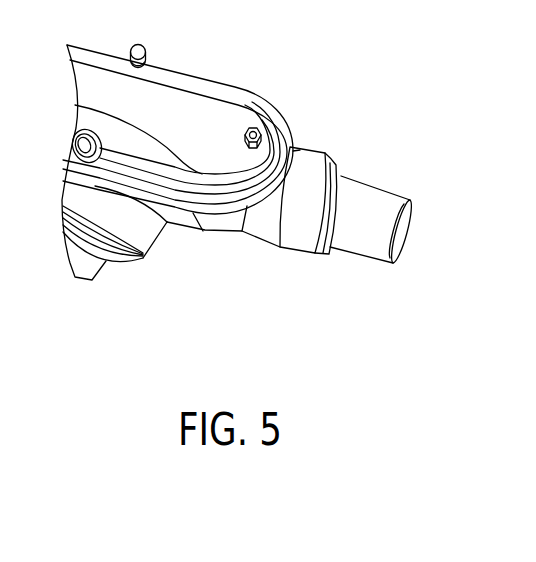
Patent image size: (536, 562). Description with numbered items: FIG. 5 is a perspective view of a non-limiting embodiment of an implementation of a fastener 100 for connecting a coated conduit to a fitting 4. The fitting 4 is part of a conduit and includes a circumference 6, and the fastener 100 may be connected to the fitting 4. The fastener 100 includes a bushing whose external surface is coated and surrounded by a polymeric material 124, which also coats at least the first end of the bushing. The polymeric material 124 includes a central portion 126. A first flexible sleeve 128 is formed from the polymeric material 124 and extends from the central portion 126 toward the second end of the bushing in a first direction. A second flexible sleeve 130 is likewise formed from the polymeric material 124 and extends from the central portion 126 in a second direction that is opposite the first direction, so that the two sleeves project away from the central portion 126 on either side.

The fitting 4 is at (194, 261).
The circumference 6 is at (273, 233).
The fastener 100 is at (376, 179).
The polymeric material 124 is at (325, 206).
The central portion 126 is at (331, 265).
The first flexible sleeve 128 is at (332, 158).
The second flexible sleeve 130 is at (397, 187).